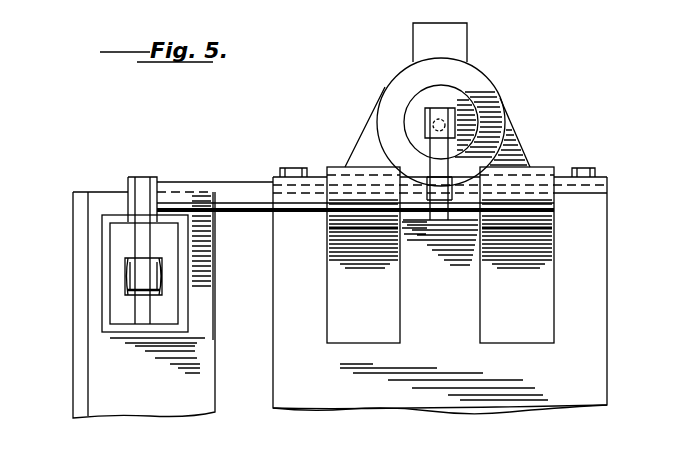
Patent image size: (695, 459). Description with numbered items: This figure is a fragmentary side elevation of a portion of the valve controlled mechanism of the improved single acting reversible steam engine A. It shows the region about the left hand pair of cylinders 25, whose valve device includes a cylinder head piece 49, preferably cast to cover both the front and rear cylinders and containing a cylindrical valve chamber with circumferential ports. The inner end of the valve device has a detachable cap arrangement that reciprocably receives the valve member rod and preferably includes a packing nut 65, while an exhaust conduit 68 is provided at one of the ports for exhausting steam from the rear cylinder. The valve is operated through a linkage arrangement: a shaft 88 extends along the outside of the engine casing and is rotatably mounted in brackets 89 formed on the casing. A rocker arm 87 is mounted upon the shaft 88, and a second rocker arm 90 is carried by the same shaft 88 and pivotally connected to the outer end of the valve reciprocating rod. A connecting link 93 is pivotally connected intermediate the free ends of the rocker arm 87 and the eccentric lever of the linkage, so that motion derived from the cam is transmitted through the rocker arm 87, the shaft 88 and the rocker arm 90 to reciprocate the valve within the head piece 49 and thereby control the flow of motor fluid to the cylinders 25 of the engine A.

The left hand pair of cylinders 25 is at (593, 294).
The cylinder head piece 49 is at (397, 92).
The packing nut 65 is at (445, 98).
The exhaust conduit 68 is at (447, 43).
The rocker arm 87 is at (142, 233).
The shaft 88 is at (252, 197).
The brackets 89 is at (553, 264).
The rocker arm 90 is at (440, 153).
The connecting link 93 is at (150, 310).
The single acting reversible engine A is at (350, 373).